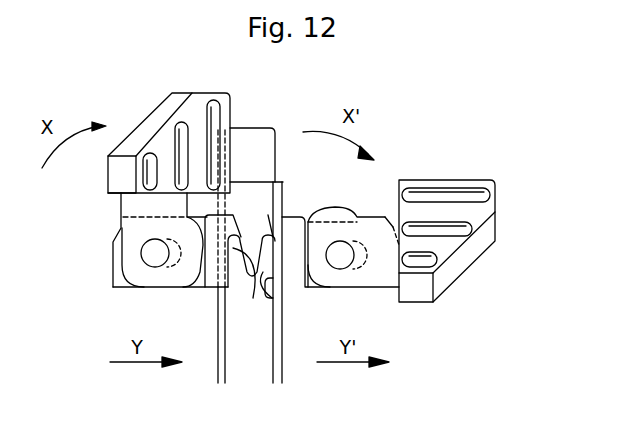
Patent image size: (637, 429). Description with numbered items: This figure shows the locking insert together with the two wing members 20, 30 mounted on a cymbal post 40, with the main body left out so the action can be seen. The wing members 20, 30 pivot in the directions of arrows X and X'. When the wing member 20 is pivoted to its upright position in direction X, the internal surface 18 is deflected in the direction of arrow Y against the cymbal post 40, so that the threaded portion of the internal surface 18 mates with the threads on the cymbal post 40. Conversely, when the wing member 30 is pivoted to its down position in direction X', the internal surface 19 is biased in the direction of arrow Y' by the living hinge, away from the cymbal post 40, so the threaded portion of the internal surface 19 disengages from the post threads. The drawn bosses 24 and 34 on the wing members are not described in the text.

The internal surface 18 is at (229, 273).
The internal surface 19 is at (287, 295).
The wing member 20 is at (158, 108).
The first boss 24 is at (193, 273).
The wing member 30 is at (460, 180).
The second boss 34 is at (332, 207).
The cymbal post 40 is at (256, 128).